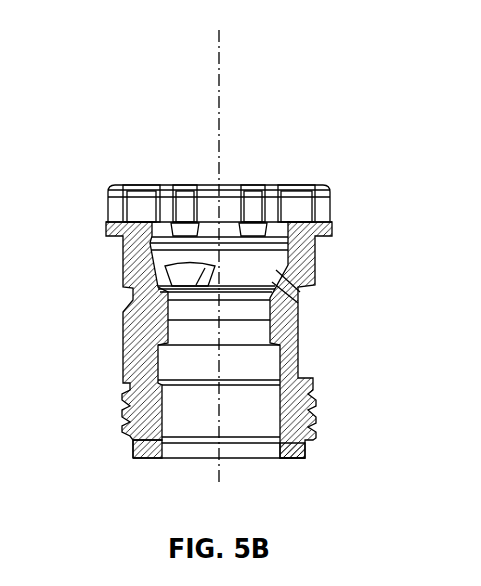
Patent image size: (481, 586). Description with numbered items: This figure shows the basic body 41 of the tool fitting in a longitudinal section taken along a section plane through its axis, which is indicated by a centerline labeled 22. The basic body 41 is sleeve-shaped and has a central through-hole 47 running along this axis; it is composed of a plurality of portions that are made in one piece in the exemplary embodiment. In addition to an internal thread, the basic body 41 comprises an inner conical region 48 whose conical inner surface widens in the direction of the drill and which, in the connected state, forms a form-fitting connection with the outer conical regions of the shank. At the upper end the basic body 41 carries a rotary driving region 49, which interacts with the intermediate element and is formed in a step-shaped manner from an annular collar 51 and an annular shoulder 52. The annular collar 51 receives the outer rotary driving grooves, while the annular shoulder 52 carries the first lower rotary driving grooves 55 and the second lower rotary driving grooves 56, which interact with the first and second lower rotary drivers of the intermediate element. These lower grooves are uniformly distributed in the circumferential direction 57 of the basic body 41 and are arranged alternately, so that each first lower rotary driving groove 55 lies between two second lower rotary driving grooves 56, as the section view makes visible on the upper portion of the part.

The basic body 41 is at (133, 79).
The central axis 22 is at (220, 38).
The circumferential direction 57 is at (191, 100).
The first lower rotary driving grooves 55 is at (143, 220).
The second lower rotary driving grooves 56 is at (183, 227).
The annular collar 51 is at (330, 193).
The annular shoulder 52 is at (330, 229).
The rotary driving region 49 is at (99, 208).
The inner conical region 48 is at (283, 250).
The central through-hole 47 is at (243, 408).